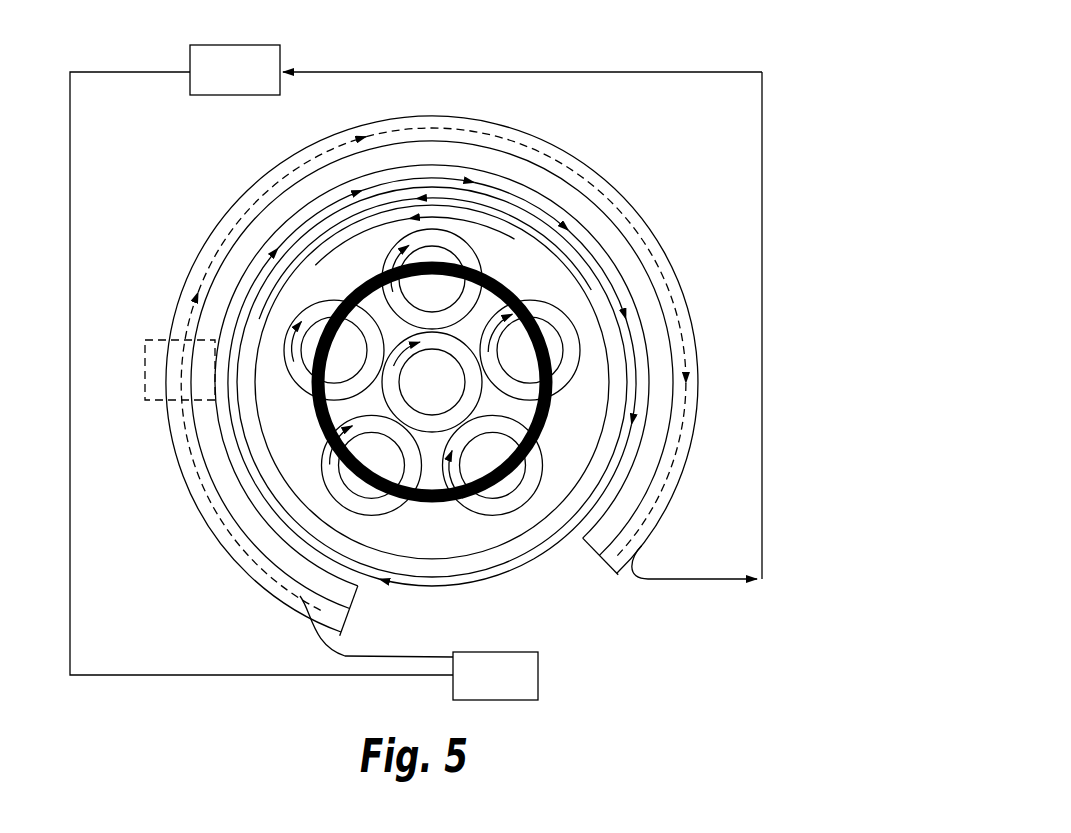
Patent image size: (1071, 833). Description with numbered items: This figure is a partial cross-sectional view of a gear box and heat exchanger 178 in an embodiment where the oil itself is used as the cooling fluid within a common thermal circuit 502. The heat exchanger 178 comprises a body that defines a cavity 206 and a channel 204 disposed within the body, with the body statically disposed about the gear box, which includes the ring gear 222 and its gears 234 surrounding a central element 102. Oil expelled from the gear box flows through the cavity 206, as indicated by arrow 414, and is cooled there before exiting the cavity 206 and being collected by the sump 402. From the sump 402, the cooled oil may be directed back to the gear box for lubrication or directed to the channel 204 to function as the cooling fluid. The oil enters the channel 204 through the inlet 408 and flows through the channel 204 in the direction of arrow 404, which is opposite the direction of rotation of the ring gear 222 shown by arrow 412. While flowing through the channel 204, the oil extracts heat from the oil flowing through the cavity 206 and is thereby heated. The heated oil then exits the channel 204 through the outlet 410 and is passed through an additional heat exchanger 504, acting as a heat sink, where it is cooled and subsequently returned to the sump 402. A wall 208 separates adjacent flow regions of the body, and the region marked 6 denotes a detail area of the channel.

The detail region (FIG. 6) 6 is at (145, 340).
The fuel cell stack / central tube 102 is at (427, 387).
The heat exchanger 178 is at (670, 146).
The channel 204 is at (558, 147).
The cavity 206 is at (634, 442).
The intermediate wall 208 is at (640, 333).
The ring gear 222 is at (590, 285).
The tubes 234 is at (330, 296).
The sump 402 is at (474, 571).
The arrow 404 is at (177, 406).
The inlet 408 is at (301, 619).
The outlet 410 is at (629, 581).
The arrow 412 is at (468, 202).
The arrow 414 is at (558, 227).
The common thermal circuit 502 is at (772, 66).
The additional heat exchanger 504 is at (235, 70).